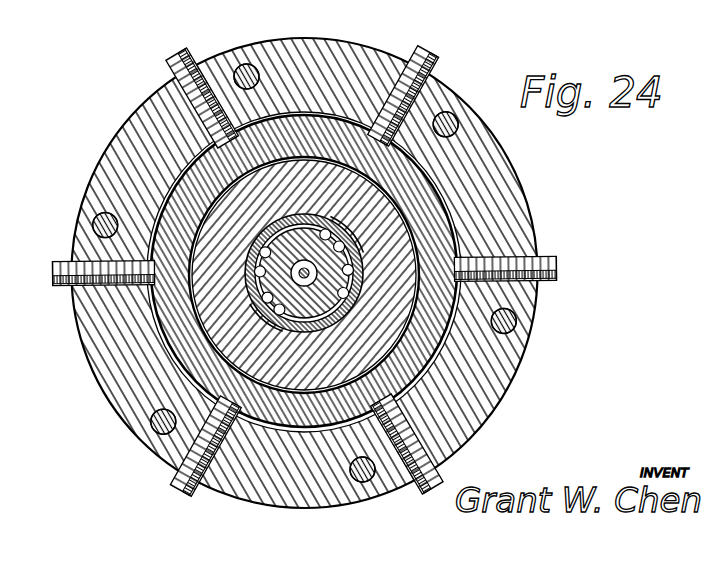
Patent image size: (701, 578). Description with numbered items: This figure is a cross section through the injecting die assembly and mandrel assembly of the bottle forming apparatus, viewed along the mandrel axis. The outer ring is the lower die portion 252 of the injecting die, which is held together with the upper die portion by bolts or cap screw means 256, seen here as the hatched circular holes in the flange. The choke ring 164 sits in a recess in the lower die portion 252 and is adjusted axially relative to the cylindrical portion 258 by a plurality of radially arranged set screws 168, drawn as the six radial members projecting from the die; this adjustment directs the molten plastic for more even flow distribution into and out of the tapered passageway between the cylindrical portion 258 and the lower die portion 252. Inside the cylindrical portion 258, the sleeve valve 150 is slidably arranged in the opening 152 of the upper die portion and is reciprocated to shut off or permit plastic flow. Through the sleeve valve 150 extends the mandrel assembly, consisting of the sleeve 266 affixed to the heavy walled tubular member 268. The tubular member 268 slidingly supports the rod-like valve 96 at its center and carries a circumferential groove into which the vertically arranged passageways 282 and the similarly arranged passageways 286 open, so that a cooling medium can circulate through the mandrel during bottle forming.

The valve 96 is at (306, 285).
The sleeve valve 150 is at (250, 297).
The opening 152 is at (336, 224).
The choke ring 164 is at (465, 222).
The set screws 168 is at (428, 61).
The lower die portion 252 is at (523, 302).
The cap screw means 256 is at (247, 64).
The cylindrical portion 258 is at (383, 293).
The sleeve 266 is at (267, 232).
The tubular member 268 is at (283, 306).
The passageways 282 is at (253, 269).
The passageways 286 is at (353, 268).